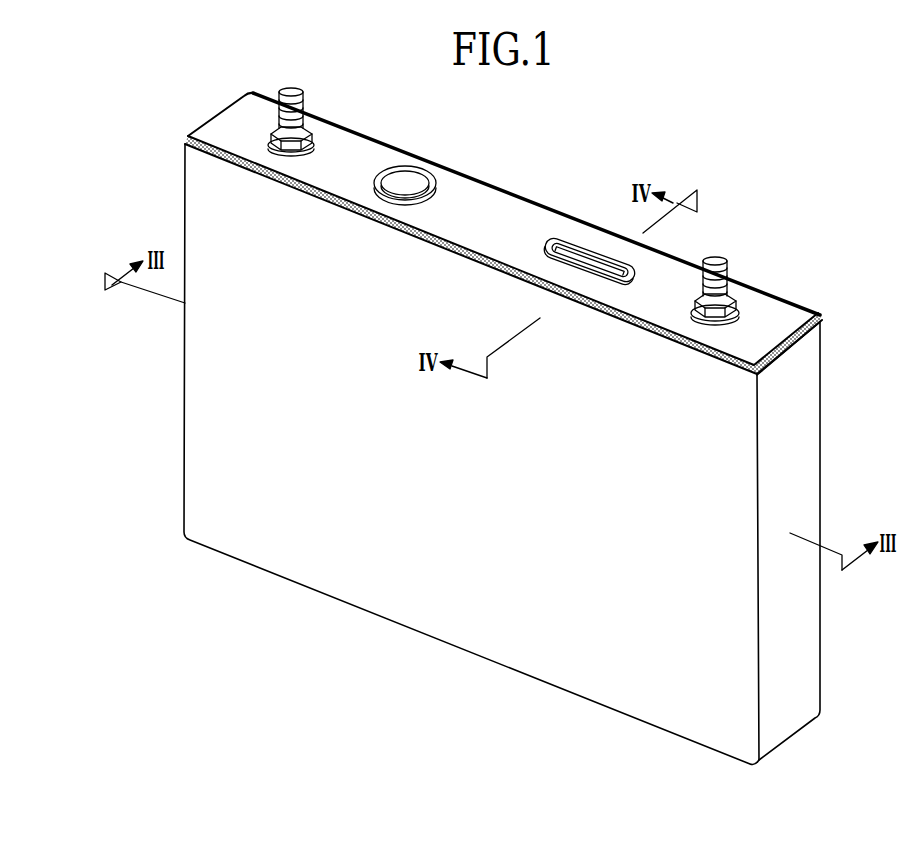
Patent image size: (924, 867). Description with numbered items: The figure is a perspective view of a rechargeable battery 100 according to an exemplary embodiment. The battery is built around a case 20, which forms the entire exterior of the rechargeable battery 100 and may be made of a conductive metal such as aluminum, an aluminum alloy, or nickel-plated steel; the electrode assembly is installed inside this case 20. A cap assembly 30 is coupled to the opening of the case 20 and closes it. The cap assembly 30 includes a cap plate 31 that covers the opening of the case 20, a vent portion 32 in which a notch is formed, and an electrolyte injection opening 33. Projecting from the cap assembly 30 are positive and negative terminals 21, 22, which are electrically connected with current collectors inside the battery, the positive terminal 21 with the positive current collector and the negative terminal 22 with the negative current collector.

The rechargeable battery 100 is at (680, 107).
The case 20 is at (446, 624).
The positive terminal 21 is at (293, 92).
The negative terminal 22 is at (716, 261).
The cap assembly 30 is at (503, 232).
The cap plate 31 is at (345, 143).
The vent portion 32 is at (575, 248).
The electrolyte injection opening 33 is at (405, 183).